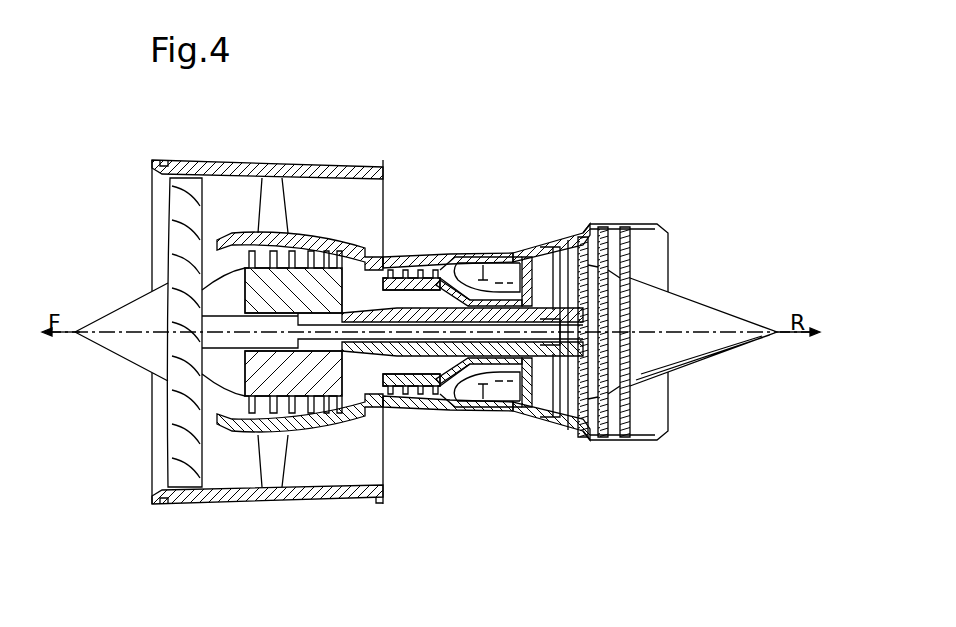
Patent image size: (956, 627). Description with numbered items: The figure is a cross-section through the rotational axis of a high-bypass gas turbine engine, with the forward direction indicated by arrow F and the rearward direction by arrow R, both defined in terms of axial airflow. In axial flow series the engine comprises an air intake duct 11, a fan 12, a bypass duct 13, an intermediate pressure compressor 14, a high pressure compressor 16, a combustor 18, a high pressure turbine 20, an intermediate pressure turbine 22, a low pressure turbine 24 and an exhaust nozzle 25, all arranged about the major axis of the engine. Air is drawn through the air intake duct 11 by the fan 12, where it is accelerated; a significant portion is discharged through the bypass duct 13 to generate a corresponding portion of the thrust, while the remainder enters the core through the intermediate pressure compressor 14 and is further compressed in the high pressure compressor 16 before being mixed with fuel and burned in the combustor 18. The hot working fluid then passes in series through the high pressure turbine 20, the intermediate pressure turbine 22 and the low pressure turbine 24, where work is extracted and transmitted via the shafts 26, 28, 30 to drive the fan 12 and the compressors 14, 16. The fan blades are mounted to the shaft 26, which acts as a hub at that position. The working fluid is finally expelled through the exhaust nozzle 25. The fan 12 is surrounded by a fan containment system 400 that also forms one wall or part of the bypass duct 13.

The fan containment system 400 is at (181, 507).
The air intake duct 11 is at (156, 186).
The fan 12 is at (169, 224).
The bypass duct 13 is at (342, 211).
The intermediate pressure compressor 14 is at (251, 252).
The high pressure compressor 16 is at (423, 262).
The combustor 18 is at (486, 265).
The high pressure turbine 20 is at (530, 250).
The intermediate pressure turbine 22 is at (575, 247).
The low pressure turbine 24 is at (625, 226).
The exhaust nozzle 25 is at (662, 265).
The shaft 26 is at (228, 340).
The shaft 28 is at (450, 352).
The shaft 30 is at (515, 390).